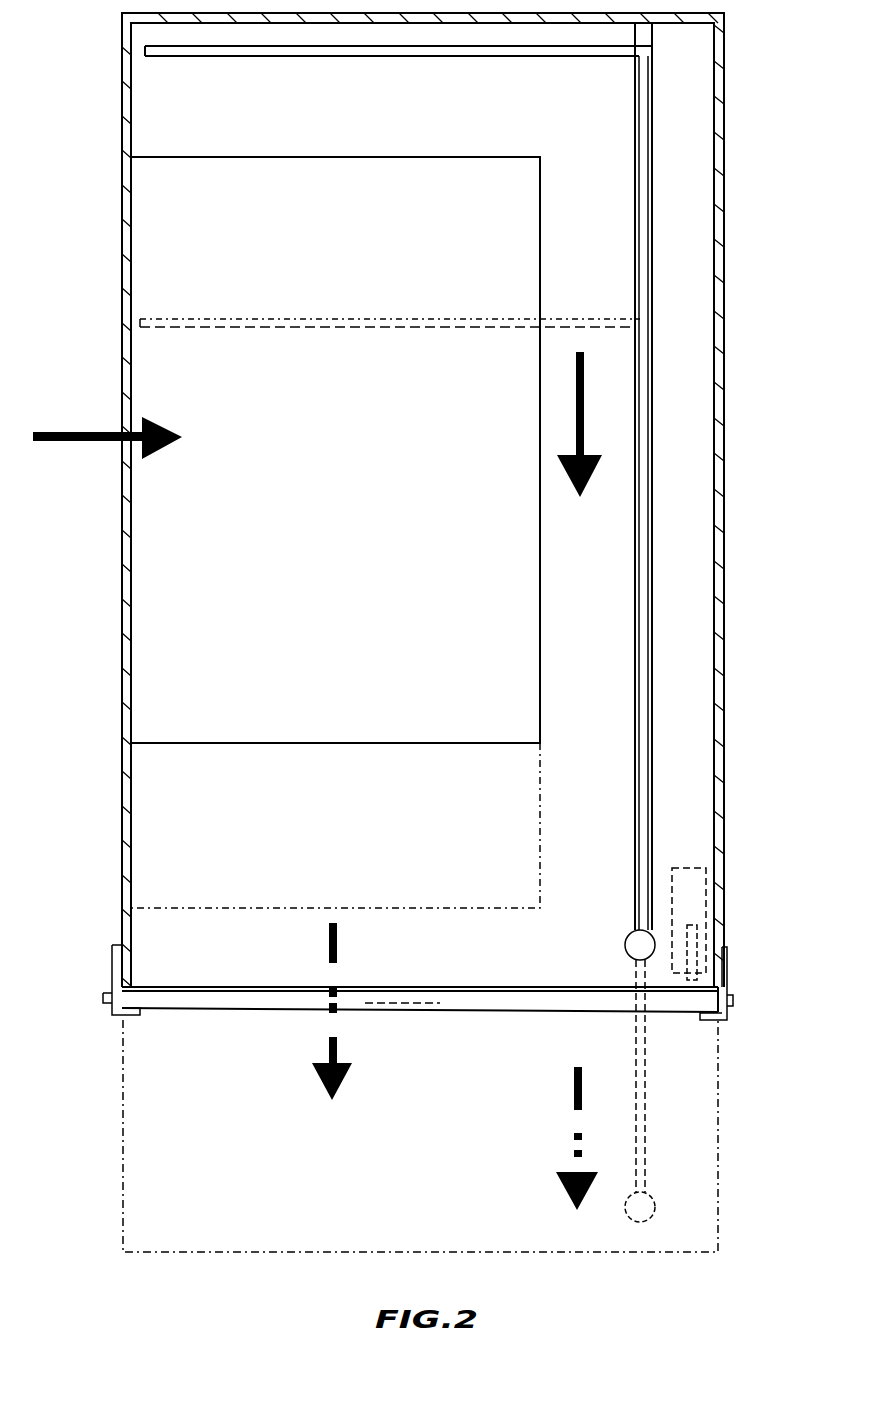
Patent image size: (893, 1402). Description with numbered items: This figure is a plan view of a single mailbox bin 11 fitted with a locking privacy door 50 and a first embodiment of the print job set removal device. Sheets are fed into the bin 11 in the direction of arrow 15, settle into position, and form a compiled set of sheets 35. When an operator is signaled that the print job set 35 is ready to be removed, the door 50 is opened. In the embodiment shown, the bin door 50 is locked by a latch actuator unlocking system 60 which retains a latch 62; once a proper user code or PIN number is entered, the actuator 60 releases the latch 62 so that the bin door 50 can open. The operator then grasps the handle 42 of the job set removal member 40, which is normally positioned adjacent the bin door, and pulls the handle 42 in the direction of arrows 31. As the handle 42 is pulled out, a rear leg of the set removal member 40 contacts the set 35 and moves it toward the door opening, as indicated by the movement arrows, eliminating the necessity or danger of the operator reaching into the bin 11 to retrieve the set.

The mailbox bin 11 is at (122, 287).
The arrow 15 is at (75, 445).
The arrows 31 is at (587, 485).
The compiled set of sheets 35 is at (343, 733).
The job set removal member 40 is at (643, 123).
The handle 42 is at (648, 950).
The privacy door 50 is at (551, 1003).
The latch actuator unlocking system 60 is at (693, 887).
The latch 62 is at (697, 942).